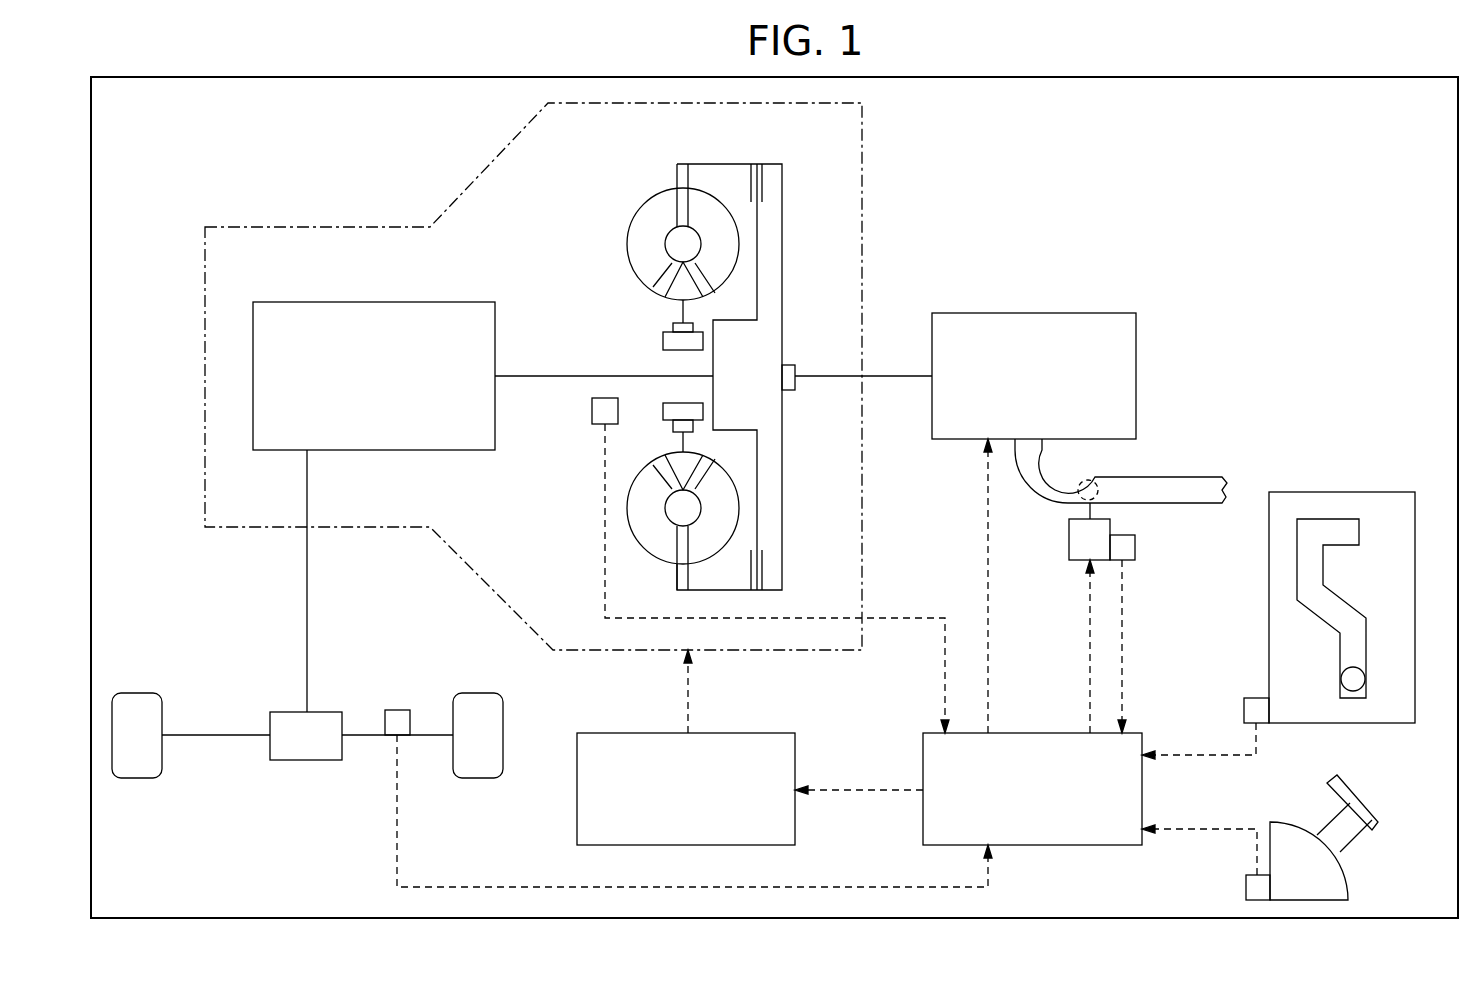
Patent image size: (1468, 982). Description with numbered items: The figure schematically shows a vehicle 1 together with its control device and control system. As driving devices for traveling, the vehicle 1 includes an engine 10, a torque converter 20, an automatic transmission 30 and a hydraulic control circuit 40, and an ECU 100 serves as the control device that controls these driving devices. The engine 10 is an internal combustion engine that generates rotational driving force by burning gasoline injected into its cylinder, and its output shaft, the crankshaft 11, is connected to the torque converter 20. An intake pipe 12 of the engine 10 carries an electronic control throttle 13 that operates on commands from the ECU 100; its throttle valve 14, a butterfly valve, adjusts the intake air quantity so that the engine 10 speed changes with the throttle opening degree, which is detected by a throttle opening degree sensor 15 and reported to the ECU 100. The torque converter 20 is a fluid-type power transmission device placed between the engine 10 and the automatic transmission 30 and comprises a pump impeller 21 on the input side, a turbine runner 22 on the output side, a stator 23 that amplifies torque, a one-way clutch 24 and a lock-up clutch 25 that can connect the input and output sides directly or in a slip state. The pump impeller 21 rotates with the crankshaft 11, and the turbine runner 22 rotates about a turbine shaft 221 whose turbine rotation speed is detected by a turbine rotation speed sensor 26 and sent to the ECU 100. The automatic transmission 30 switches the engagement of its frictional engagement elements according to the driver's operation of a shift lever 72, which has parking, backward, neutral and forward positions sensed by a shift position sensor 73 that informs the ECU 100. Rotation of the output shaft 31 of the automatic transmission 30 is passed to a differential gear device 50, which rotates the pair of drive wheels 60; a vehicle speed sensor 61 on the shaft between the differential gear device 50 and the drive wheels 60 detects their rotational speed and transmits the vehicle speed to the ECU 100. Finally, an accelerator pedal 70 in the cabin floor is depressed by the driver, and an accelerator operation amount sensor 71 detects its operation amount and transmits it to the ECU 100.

The vehicle 1 is at (146, 76).
The engine 10 is at (1143, 300).
The crankshaft 11 is at (895, 375).
The intake pipe 12 is at (1210, 475).
The electronic control throttle 13 is at (1069, 540).
The throttle valve 14 is at (1098, 486).
The throttle opening degree sensor 15 is at (1135, 546).
The torque converter 20 is at (663, 145).
The pump impeller 21 is at (626, 244).
The turbine runner 22 is at (710, 193).
The stator 23 is at (676, 286).
The one-way clutch 24 is at (670, 325).
The lock-up clutch 25 is at (772, 178).
The turbine rotation speed sensor 26 is at (602, 427).
The turbine shaft 221 is at (546, 378).
The automatic transmission 30 is at (375, 296).
The output shaft 31 is at (306, 620).
The hydraulic control circuit 40 is at (642, 848).
The differential gear device 50 is at (306, 762).
The drive wheels 60 is at (133, 780).
The vehicle speed sensor 61 is at (398, 710).
The accelerator pedal 70 is at (1358, 792).
The accelerator operation amount sensor 71 is at (1246, 882).
The shift lever 72 is at (1365, 680).
The shift position sensor 73 is at (1256, 697).
The ECU 100 is at (1088, 846).